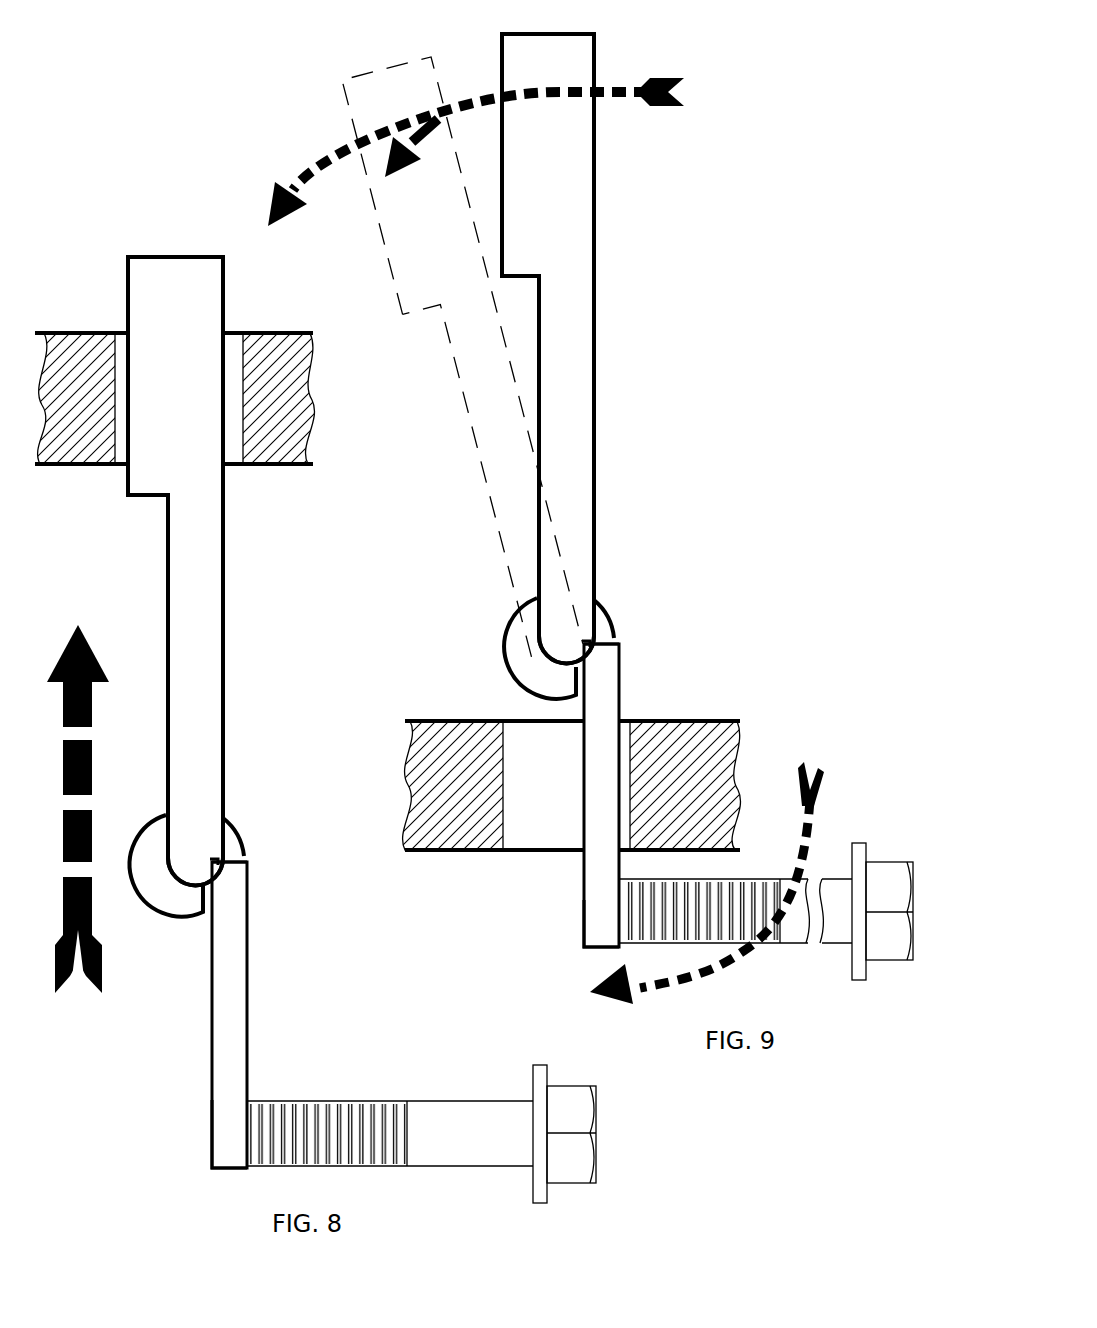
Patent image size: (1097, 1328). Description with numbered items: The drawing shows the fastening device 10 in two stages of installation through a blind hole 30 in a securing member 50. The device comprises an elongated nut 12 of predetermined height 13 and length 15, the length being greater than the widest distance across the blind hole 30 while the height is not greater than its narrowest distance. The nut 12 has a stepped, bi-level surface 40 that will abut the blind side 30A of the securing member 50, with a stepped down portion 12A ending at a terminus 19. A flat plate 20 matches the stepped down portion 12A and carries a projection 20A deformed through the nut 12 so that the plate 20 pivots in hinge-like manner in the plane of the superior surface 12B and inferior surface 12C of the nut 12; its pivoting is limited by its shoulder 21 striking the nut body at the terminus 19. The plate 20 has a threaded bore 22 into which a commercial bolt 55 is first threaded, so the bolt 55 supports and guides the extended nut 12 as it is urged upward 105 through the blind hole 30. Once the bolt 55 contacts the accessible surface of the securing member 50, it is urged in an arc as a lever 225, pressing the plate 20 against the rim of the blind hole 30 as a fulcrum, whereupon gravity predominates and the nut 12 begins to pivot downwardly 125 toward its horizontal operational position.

In FIG. 8, the fastening device 10 is at (177, 275).
In FIG. 9, the fastening device 10 is at (565, 75).
In FIG. 8, the elongated nut 12 is at (153, 295).
In FIG. 9, the elongated nut 12 is at (555, 157).
In FIG. 8, the stepped down portion 12A is at (172, 695).
In FIG. 9, the stepped down portion 12A is at (557, 212).
In FIG. 8, the superior surface 12B is at (225, 283).
In FIG. 9, the superior surface 12B is at (586, 265).
In FIG. 8, the inferior surface 12C is at (127, 317).
In FIG. 8, the height 13 is at (188, 253).
In FIG. 8, the length 15 is at (228, 610).
In FIG. 9, the length 15 is at (597, 470).
In FIG. 8, the terminus 19 is at (227, 858).
In FIG. 9, the terminus 19 is at (598, 642).
In FIG. 8, the plate 20 is at (236, 990).
In FIG. 9, the plate 20 is at (592, 880).
In FIG. 8, the projection 20A is at (183, 904).
In FIG. 9, the projection 20A is at (522, 673).
In FIG. 8, the shoulder 21 is at (250, 857).
In FIG. 9, the shoulder 21 is at (618, 645).
In FIG. 8, the threaded bore 22 is at (212, 1135).
In FIG. 9, the threaded bore 22 is at (579, 930).
In FIG. 8, the blind hole 30 is at (200, 413).
In FIG. 9, the blind hole 30 is at (552, 762).
In FIG. 8, the blind side 30A is at (273, 332).
In FIG. 9, the blind side 30A is at (667, 718).
In FIG. 8, the stepped, bi-level surface 40 is at (123, 480).
In FIG. 8, the securing member 50 is at (40, 468).
In FIG. 9, the securing member 50 is at (421, 788).
In FIG. 8, the fastening bolt 55 is at (482, 1117).
In FIG. 9, the fastening bolt 55 is at (772, 953).
In FIG. 8, the urging through the blind hole 105 is at (87, 765).
In FIG. 9, the downward pivoting 125 is at (598, 88).
In FIG. 9, the lever action 225 is at (807, 830).